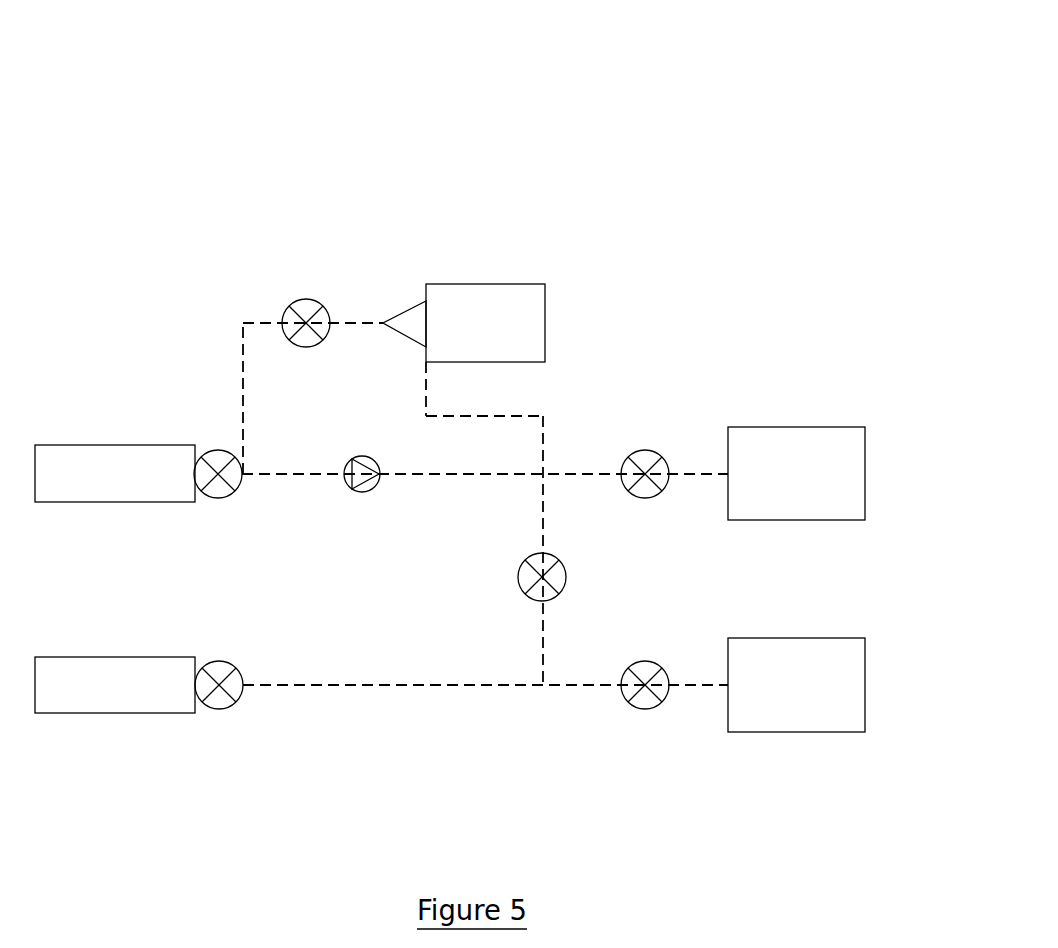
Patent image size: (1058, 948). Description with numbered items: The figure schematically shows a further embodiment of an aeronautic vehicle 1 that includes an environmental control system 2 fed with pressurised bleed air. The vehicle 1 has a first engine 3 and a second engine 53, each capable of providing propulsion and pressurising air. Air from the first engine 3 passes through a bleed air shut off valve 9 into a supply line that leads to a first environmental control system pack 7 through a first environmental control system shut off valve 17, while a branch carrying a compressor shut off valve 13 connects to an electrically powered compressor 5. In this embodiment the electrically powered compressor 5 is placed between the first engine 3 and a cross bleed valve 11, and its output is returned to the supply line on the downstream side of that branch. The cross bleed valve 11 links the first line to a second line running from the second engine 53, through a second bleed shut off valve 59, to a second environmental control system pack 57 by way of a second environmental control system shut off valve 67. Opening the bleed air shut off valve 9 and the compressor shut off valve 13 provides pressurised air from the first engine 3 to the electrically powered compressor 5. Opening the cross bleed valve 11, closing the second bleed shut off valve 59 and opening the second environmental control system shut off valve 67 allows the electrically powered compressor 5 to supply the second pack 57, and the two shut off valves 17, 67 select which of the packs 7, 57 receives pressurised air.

The aeronautic vehicle 1 is at (763, 162).
The environmental control system 2 is at (513, 175).
The first engine 3 is at (77, 502).
The electrically powered compressor 5 is at (520, 284).
The first environmental control system pack 7 is at (797, 427).
The bleed air shut off valve 9 is at (219, 450).
The cross bleed valve 11 is at (518, 572).
The compressor shut off valve 13 is at (306, 299).
The first environmental control system shut off valve 17 is at (650, 450).
The second engine 53 is at (115, 657).
The second environmental control system pack 57 is at (795, 732).
The second bleed shut off valve 59 is at (218, 710).
The second environmental control system shut off valve 67 is at (642, 710).